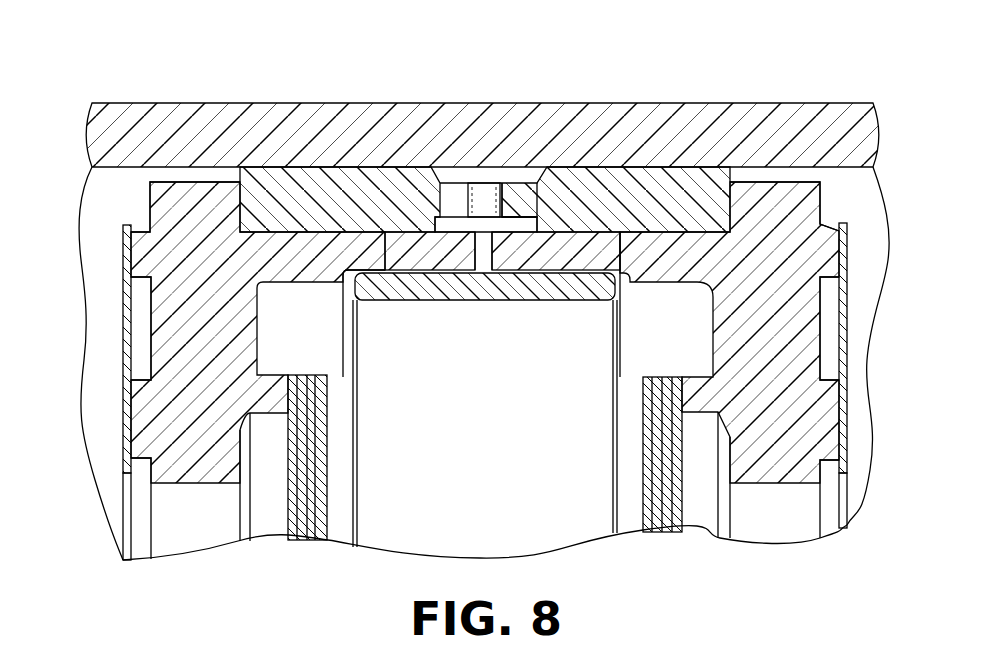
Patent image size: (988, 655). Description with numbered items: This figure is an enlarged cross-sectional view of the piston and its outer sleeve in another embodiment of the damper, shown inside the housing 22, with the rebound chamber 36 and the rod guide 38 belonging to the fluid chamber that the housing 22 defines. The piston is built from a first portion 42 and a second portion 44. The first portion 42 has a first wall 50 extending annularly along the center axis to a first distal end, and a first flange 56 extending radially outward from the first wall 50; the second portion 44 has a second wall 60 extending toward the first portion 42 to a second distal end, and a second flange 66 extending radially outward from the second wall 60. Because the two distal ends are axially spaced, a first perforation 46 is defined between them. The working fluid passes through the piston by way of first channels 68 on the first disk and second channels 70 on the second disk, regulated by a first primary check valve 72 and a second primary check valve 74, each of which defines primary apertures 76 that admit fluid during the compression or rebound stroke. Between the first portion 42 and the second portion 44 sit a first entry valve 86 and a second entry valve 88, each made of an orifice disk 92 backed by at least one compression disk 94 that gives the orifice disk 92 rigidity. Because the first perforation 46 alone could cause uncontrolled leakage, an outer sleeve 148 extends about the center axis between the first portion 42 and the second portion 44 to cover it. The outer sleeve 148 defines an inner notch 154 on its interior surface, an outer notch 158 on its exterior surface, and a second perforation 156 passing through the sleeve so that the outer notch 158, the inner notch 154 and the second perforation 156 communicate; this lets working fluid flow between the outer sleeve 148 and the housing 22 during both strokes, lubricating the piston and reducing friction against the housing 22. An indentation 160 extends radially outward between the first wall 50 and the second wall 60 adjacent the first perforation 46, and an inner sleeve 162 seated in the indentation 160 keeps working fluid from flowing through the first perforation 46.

The housing 22 is at (109, 117).
The rebound chamber 36 is at (88, 200).
The rod guide 38 is at (880, 200).
The first portion 42 is at (780, 200).
The second portion 44 is at (195, 205).
The first perforation 46 is at (470, 247).
The first wall 50 is at (545, 255).
The first flange 56 is at (770, 205).
The second wall 60 is at (437, 253).
The second flange 66 is at (218, 192).
The first channels 68 is at (773, 515).
The second channels 70 is at (185, 540).
The first primary check valve 72 is at (841, 272).
The second primary check valve 74 is at (122, 318).
The primary apertures 76 is at (124, 520).
The first entry valve 86 is at (665, 535).
The second entry valve 88 is at (305, 543).
The orifice disk 92 is at (297, 377).
The compression disk 94 is at (320, 377).
The outer sleeve 148 is at (570, 197).
The inner notch 154 is at (438, 218).
The second perforation 156 is at (486, 190).
The outer notch 158 is at (507, 190).
The indentation 160 is at (624, 268).
The inner sleeve 162 is at (385, 278).